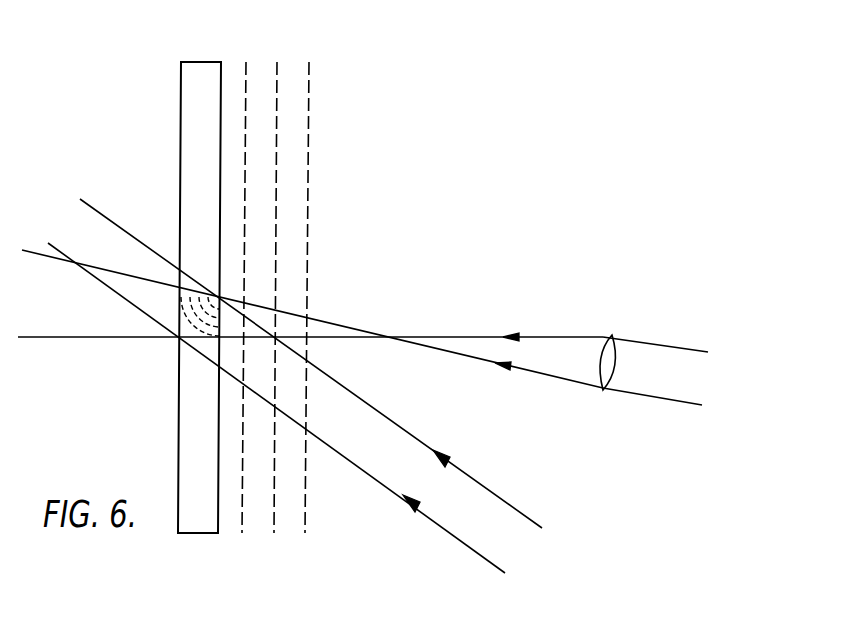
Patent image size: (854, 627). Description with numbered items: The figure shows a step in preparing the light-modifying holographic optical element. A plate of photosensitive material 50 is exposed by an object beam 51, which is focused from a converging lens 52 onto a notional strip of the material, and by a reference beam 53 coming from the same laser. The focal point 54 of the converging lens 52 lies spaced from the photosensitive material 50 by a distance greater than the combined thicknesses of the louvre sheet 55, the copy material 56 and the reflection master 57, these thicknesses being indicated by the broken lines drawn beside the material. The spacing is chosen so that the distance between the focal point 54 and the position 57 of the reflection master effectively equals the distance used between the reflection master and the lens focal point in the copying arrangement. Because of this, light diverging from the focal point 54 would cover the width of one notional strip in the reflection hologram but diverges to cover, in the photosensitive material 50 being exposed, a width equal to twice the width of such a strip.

The photosensitive material 50 is at (200, 150).
The object beam 51 is at (325, 321).
The converging lens 52 is at (616, 354).
The reference beam 53 is at (403, 431).
The focal point 54 is at (380, 334).
The louvre sheet 55 is at (235, 82).
The copy material 56 is at (268, 78).
The reflection master 57 is at (298, 119).